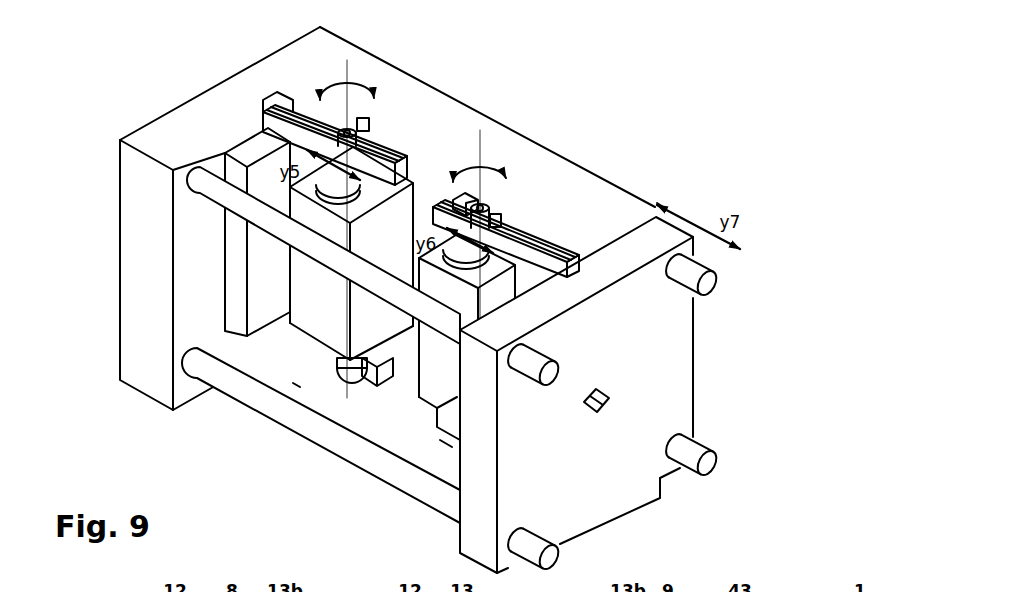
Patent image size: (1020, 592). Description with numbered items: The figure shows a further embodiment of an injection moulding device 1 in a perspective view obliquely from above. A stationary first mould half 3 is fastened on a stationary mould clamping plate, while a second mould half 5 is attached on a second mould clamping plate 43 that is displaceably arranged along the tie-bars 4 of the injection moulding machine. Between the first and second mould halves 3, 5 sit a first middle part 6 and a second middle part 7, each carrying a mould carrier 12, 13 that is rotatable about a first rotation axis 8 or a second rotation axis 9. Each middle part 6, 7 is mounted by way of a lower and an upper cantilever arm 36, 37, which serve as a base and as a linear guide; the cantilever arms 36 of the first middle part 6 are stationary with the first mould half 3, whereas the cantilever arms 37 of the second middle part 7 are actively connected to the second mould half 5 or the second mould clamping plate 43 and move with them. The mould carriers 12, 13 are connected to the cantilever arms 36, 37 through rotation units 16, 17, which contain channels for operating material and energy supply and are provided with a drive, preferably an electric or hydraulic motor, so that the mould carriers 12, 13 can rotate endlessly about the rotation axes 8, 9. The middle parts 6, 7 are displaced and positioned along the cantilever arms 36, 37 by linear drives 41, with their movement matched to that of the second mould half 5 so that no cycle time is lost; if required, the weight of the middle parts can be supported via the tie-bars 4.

The injection moulding device 1 is at (513, 80).
The first mould half 3 is at (221, 165).
The tie-bars 4 is at (220, 193).
The second mould half 5 is at (590, 253).
The first middle part 6 is at (293, 383).
The second middle part 7 is at (394, 420).
The first rotation axis 8 is at (358, 125).
The second rotation axis 9 is at (490, 200).
The mould carrier 12 is at (405, 210).
The mould carrier 13 is at (443, 392).
The rotation unit 16 is at (336, 389).
The rotation unit 17 is at (365, 145).
The cantilever arm 36 is at (277, 108).
The cantilever arm 37 is at (525, 229).
The linear drive 41 is at (210, 120).
The second mould clamping plate 43 is at (657, 203).